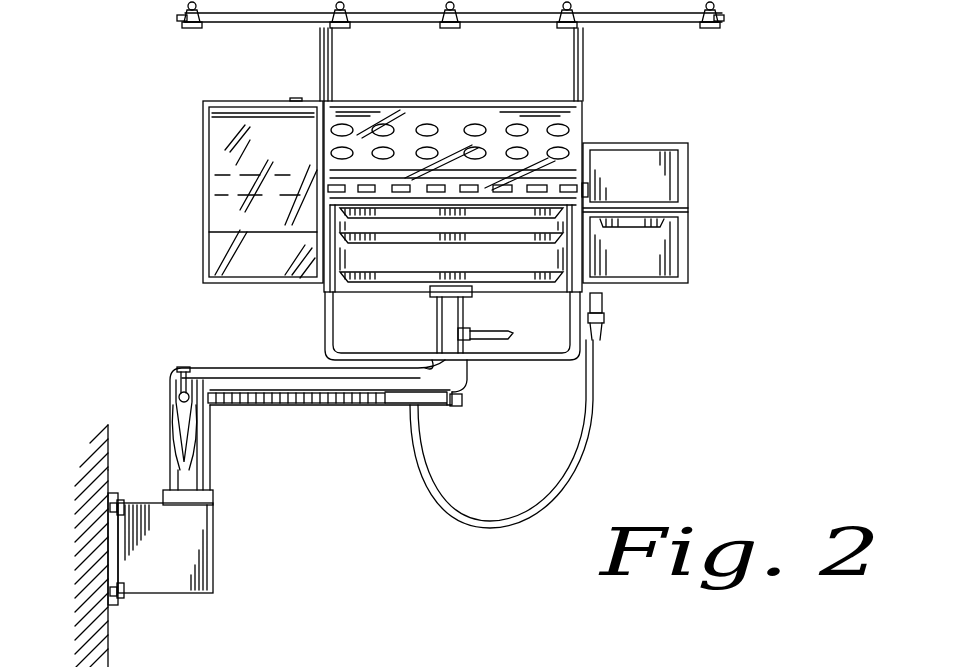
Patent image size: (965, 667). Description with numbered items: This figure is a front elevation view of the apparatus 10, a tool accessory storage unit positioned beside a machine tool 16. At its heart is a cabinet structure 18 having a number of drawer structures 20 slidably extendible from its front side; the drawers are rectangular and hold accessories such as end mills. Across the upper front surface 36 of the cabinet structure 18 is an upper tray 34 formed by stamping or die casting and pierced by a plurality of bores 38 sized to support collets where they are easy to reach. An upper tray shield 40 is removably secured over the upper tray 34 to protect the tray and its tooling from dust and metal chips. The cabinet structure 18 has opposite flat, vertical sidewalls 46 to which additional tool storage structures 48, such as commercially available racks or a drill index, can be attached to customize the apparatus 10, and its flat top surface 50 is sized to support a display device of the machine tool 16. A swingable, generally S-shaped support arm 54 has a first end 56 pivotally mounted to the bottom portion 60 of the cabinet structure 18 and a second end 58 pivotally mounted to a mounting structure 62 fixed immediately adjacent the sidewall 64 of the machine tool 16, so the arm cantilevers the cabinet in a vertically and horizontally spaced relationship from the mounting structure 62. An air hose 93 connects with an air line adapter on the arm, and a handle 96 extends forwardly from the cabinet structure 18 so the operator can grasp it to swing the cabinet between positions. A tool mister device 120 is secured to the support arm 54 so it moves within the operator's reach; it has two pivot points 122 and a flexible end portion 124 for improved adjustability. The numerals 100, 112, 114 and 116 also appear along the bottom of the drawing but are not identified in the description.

The apparatus 10 is at (711, 74).
The machine tool 16 is at (95, 577).
The cabinet structure 18 is at (585, 118).
The drawer structures 20 is at (330, 270).
The upper tray 34 is at (567, 140).
The upper front surface 36 is at (337, 140).
The bores 38 is at (426, 124).
The upper tray shield 40 is at (595, 172).
The sidewalls 46 is at (317, 117).
The additional tool storage structures 48 is at (243, 160).
The top surface 50 is at (485, 100).
The support arm 54 is at (250, 383).
The first end 56 is at (472, 320).
The second end 58 is at (213, 438).
The bottom portion 60 is at (397, 290).
The mounting structure 62 is at (180, 550).
The sidewall 64 is at (110, 458).
The air hose 93 is at (587, 430).
The handle 96 is at (513, 365).
The base member 100 is at (675, 654).
The member 112 is at (516, 654).
The member 114 is at (527, 653).
The member 116 is at (435, 654).
The tool mister device 120 is at (357, 417).
The pivot points 122 is at (180, 393).
The flexible end portion 124 is at (265, 410).